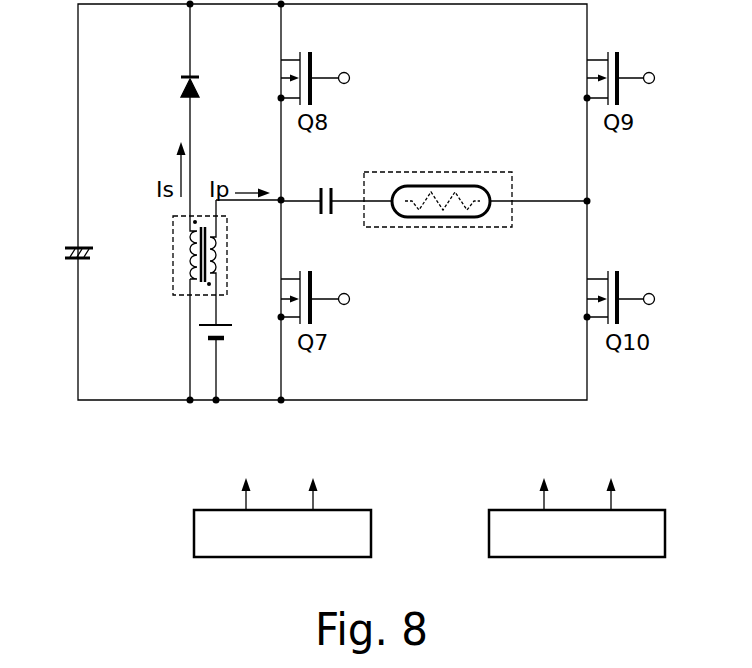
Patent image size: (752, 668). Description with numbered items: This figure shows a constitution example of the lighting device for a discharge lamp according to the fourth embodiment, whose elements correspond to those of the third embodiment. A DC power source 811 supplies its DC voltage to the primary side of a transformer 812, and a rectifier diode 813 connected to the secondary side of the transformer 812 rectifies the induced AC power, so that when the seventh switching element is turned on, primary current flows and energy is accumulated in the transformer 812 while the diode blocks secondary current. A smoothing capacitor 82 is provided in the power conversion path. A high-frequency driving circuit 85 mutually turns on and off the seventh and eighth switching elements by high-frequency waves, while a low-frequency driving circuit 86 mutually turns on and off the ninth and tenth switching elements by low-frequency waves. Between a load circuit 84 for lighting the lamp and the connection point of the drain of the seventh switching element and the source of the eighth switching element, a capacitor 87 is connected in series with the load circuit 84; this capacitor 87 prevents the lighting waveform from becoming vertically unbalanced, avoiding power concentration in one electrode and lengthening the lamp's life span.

The smoothing capacitor 82 is at (85, 246).
The DC power source 811 is at (253, 318).
The transformer 812 is at (173, 287).
The rectifier diode 813 is at (176, 85).
The load circuit 84 is at (451, 172).
The high-frequency driving circuit 85 is at (357, 510).
The low-frequency driving circuit 86 is at (654, 510).
The capacitor 87 is at (329, 186).